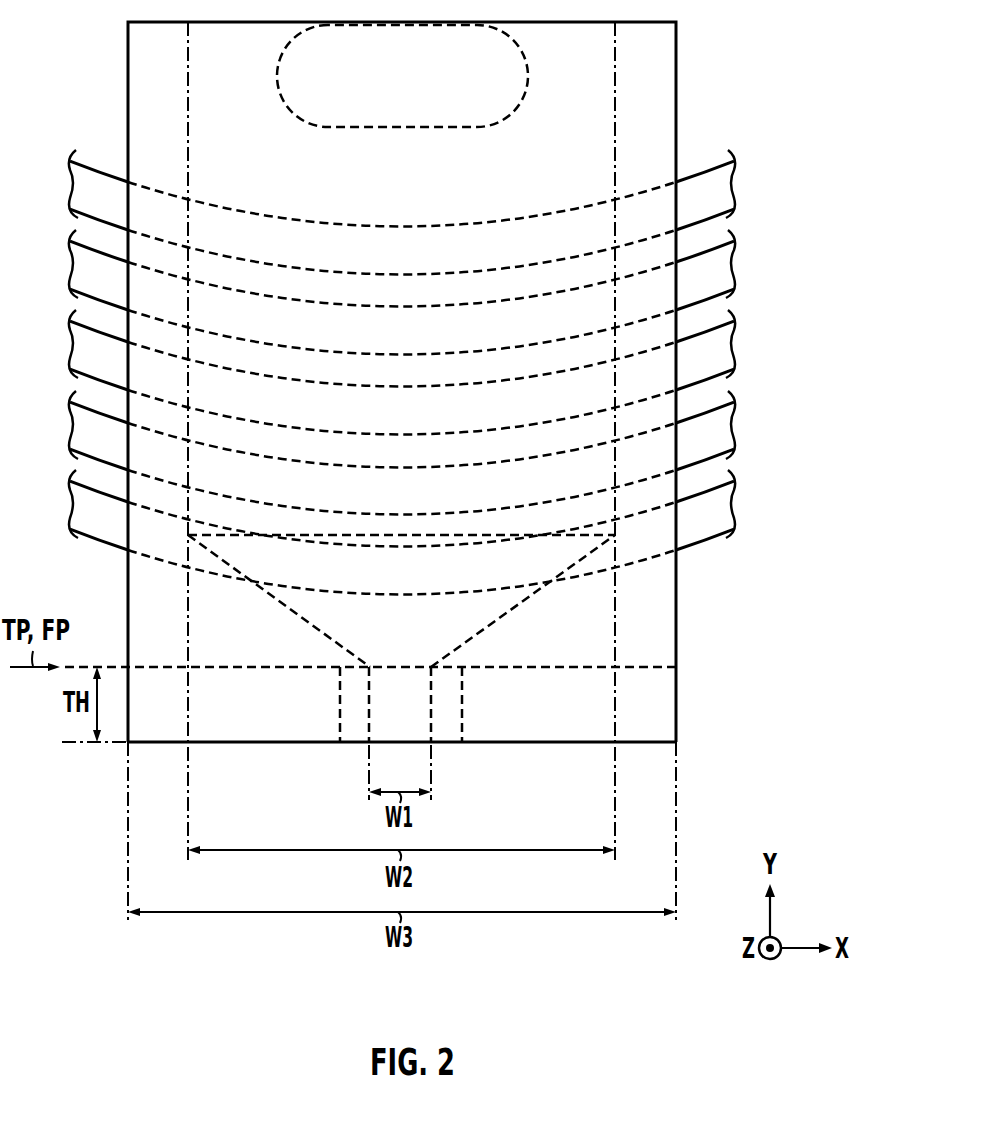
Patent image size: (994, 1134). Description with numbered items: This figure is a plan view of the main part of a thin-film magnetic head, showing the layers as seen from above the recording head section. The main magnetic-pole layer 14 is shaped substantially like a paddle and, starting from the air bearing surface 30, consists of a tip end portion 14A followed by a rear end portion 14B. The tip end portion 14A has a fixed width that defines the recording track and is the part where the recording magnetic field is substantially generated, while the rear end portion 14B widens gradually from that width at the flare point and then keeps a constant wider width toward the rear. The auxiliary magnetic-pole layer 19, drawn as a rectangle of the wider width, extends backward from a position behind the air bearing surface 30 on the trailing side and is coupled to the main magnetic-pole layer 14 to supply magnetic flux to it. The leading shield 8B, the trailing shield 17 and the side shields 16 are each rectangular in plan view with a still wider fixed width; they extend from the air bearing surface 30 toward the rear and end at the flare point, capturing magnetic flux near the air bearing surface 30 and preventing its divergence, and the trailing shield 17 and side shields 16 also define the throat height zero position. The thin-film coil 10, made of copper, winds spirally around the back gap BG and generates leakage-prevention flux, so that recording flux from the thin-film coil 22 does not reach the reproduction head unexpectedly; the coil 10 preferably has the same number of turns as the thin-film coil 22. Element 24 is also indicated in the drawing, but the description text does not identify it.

The back gap BG is at (272, 62).
The thin-film coil 10 is at (397, 345).
The thin-film coil 22 is at (101, 187).
The auxiliary magnetic-pole layer 19 is at (600, 508).
The main magnetic-pole layer 14 is at (445, 638).
The tip end portion 14A is at (410, 708).
The rear end portion 14B is at (477, 620).
The leading shield 8B is at (490, 383).
The trailing shield 17 is at (490, 383).
The side shields 16 is at (658, 693).
The edge portion 24 is at (665, 727).
The air bearing surface 30 is at (447, 752).